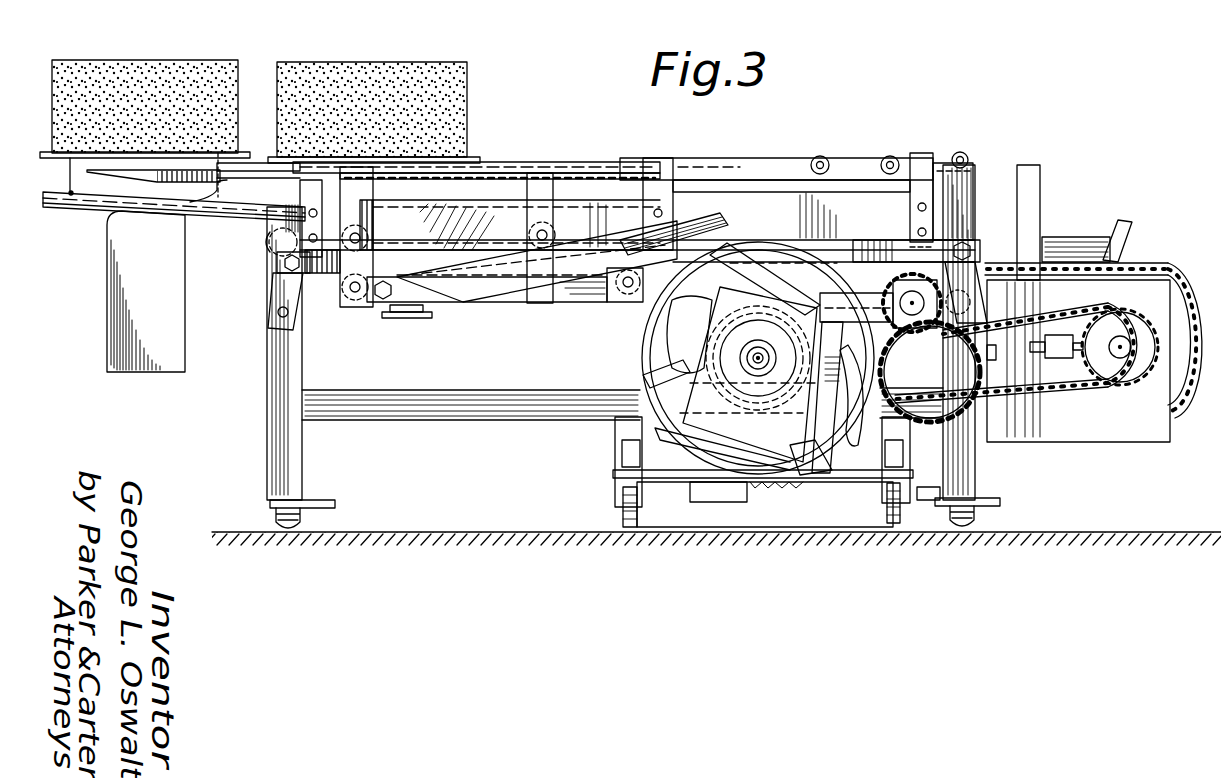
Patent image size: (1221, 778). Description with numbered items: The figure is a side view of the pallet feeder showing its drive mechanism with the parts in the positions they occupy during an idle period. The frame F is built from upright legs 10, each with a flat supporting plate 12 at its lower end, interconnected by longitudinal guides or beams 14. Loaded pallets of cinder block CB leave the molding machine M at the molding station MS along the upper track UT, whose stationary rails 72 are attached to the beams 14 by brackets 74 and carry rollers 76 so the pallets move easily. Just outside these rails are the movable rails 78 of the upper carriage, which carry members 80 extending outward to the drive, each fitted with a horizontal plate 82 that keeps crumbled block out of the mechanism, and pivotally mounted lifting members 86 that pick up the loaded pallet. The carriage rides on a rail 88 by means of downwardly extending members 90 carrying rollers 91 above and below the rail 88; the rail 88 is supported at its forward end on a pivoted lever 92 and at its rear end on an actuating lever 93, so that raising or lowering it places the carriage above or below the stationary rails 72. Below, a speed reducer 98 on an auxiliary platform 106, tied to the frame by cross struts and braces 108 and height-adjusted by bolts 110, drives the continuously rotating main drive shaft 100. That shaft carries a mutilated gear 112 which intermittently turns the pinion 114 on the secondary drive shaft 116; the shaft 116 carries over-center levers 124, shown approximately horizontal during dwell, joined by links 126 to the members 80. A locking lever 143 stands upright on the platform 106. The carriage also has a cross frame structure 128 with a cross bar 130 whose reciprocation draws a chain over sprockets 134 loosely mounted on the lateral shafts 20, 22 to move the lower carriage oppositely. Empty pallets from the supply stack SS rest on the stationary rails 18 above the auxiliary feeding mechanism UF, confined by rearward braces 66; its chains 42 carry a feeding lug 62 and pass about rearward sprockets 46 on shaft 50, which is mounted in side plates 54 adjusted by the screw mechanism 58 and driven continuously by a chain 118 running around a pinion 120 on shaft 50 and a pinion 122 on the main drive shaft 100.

The cinder block CB is at (295, 62).
The molding station MS is at (58, 180).
The molding machine M is at (106, 238).
The frame F is at (262, 393).
The upper track UT is at (856, 160).
The supply stack SS is at (1083, 232).
The auxiliary feeding mechanism UF is at (1181, 462).
The legs 10 is at (270, 355).
The supporting plate 12 is at (330, 500).
The longitudinal guides or beams 14 is at (773, 203).
The stationary rails 18 is at (215, 222).
The shaft 20 is at (962, 305).
The shaft 22 is at (276, 235).
The chains 42 is at (1192, 310).
The rearward sprockets 46 is at (1186, 445).
The shaft 50 is at (1120, 345).
The side plates 54 is at (1140, 430).
The adjusting screw mechanism 58 is at (1063, 355).
The feeding lug 62 is at (1176, 285).
The rearward braces 66 is at (1132, 228).
The stationary rails 72 is at (720, 166).
The brackets 74 is at (306, 190).
The rollers 76 is at (818, 156).
The movable rails 78 is at (514, 162).
The members 80 is at (352, 262).
The plate 82 is at (575, 163).
The lifting members 86 is at (184, 177).
The rail 88 is at (458, 252).
The downwardly extending members 90 is at (378, 200).
The rollers 91 is at (370, 238).
The pivoted lever 92 is at (283, 290).
The actuating lever 93 is at (968, 290).
The speed reducer 98 is at (708, 338).
The main drive shaft 100 is at (750, 357).
The auxiliary platform 106 is at (614, 458).
The cross struts and braces 108 is at (616, 432).
The bolts 110 is at (630, 528).
The mutilated gear 112 is at (868, 455).
The pinion 114 is at (930, 372).
The secondary drive shaft 116 is at (905, 300).
The chain 118 is at (1075, 400).
The pinion 120 is at (1122, 367).
The pinion 122 is at (736, 378).
The over-center levers 124 is at (835, 293).
The links 126 is at (720, 230).
The cross frame structure 128 is at (462, 302).
The cross bar 130 is at (412, 318).
The sprockets 134 is at (272, 246).
The locking lever 143 is at (815, 470).